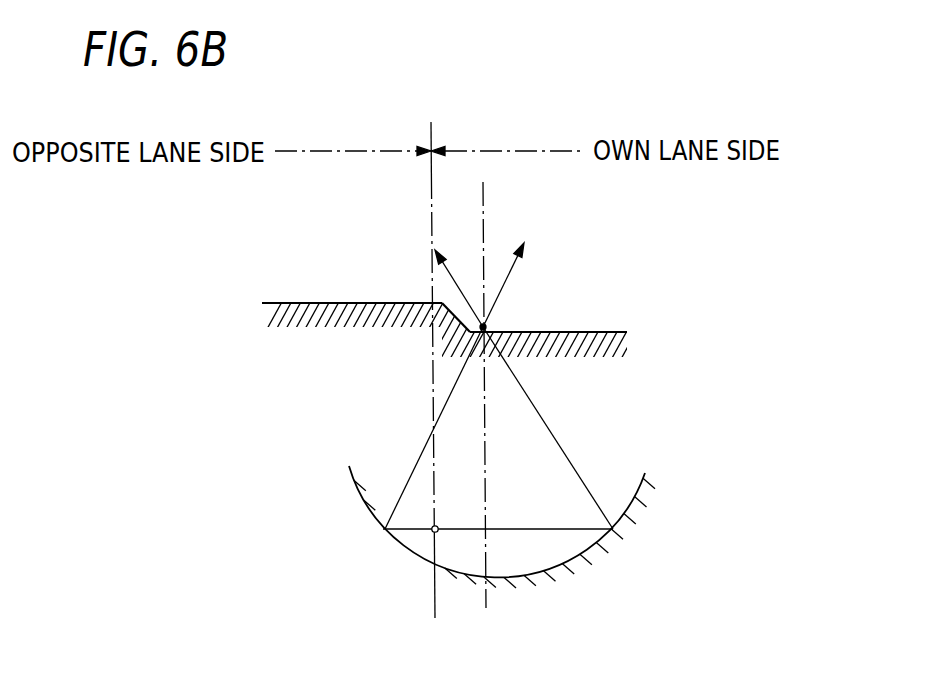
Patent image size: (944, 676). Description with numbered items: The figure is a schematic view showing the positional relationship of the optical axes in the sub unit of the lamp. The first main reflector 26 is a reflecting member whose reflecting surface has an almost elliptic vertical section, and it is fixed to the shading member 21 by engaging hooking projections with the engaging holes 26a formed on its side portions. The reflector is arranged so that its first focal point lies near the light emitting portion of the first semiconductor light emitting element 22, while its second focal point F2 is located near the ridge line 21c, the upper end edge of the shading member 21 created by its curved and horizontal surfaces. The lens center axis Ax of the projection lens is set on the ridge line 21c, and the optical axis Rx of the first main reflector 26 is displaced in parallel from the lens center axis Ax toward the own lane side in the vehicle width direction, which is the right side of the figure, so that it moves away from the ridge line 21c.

The shading member 21 is at (420, 293).
The ridge line 21c is at (280, 290).
The first semiconductor light emitting element 22 is at (421, 544).
The first main reflector 26 is at (532, 499).
The engaging hole 26a is at (638, 478).
The second focal point F2 is at (486, 326).
The lens center axis Ax is at (428, 216).
The optical axis Rx is at (488, 230).